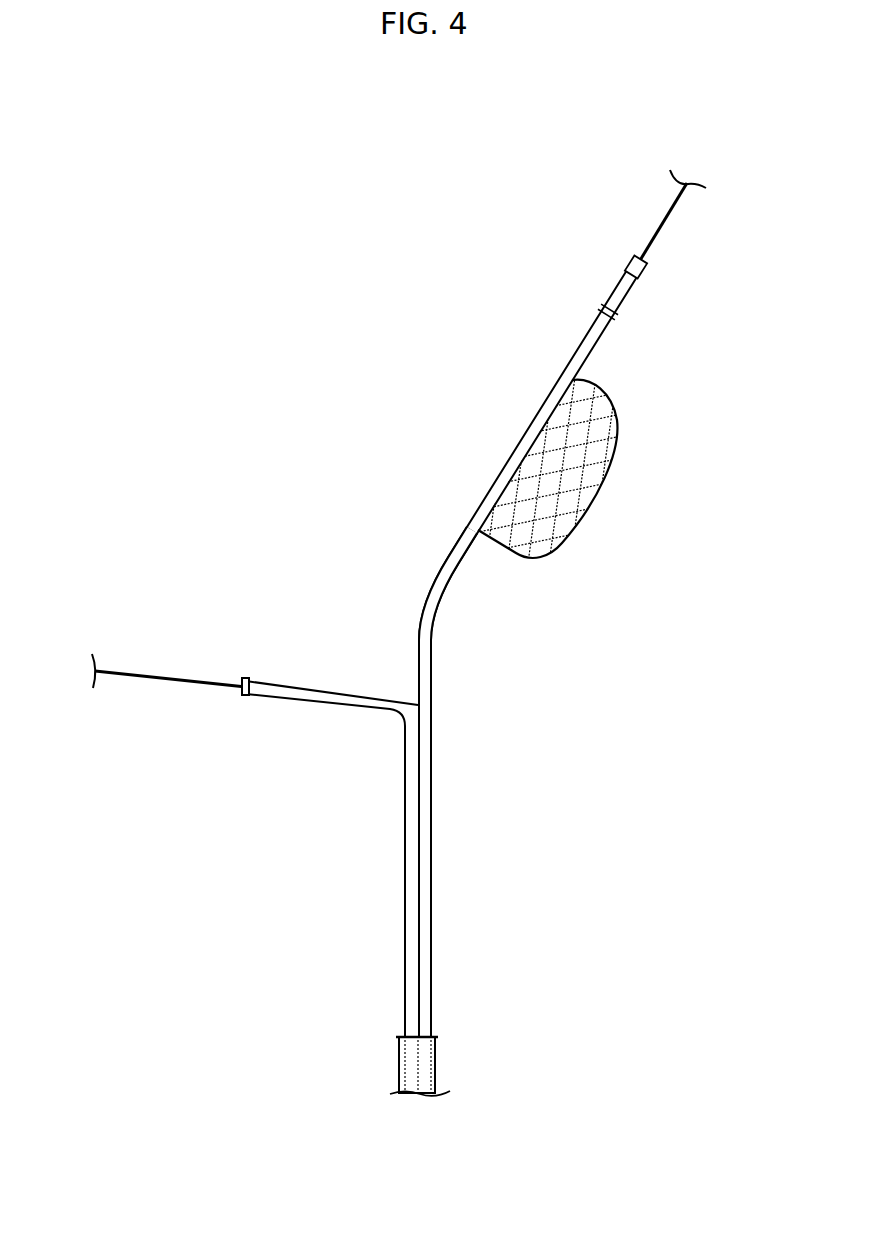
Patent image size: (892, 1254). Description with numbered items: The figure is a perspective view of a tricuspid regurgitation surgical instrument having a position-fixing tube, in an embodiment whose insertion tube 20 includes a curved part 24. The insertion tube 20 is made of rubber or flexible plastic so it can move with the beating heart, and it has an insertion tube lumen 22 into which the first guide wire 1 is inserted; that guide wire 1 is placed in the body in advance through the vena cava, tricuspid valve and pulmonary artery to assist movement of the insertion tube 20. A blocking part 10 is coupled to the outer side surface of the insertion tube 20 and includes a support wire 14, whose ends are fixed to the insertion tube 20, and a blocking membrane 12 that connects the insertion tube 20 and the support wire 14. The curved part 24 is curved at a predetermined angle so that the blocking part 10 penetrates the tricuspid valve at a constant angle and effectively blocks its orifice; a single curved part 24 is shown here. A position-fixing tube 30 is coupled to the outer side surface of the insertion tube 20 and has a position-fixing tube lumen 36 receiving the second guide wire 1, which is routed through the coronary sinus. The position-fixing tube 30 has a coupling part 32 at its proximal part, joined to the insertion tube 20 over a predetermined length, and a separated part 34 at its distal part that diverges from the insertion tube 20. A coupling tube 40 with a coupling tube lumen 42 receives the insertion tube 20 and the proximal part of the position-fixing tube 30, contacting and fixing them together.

The guide wire 1 is at (660, 225).
The blocking part 10 is at (613, 471).
The blocking membrane 12 is at (619, 422).
The support wire 14 is at (600, 388).
The insertion tube 20 is at (503, 470).
The insertion tube lumen 22 is at (628, 262).
The curved part 24 is at (419, 603).
The position-fixing tube 30 is at (307, 795).
The coupling part 32 is at (406, 925).
The separated part 34 is at (305, 687).
The position-fixing tube lumen 36 is at (237, 679).
The coupling tube 40 is at (436, 1070).
The coupling tube lumen 42 is at (437, 1013).